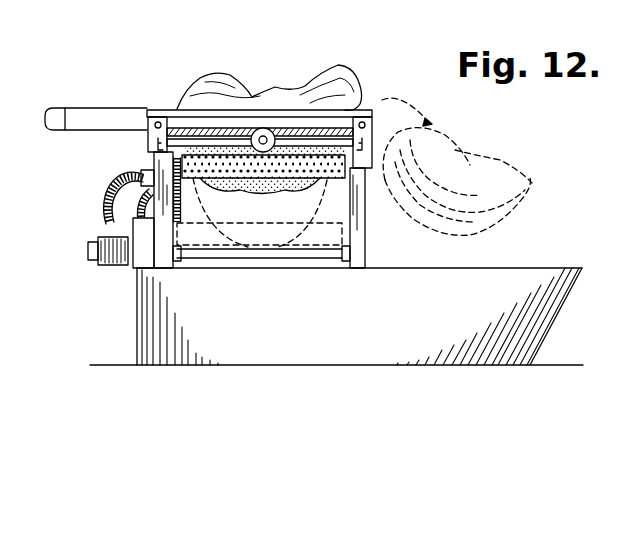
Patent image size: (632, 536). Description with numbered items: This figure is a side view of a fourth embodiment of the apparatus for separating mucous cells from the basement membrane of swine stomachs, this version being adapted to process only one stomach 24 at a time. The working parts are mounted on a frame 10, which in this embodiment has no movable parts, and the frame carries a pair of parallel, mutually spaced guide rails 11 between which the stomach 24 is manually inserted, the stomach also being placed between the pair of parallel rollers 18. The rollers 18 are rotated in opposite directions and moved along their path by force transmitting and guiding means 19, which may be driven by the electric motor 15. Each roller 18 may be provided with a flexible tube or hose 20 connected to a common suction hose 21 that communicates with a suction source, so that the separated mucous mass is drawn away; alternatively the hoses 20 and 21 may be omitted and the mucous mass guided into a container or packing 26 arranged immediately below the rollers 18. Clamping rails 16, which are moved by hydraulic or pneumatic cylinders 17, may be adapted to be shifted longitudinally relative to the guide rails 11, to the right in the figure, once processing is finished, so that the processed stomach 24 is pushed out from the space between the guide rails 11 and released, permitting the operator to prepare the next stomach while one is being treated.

The frame 10 is at (365, 250).
The guide rails 11 is at (108, 116).
The electric motor 15 is at (98, 265).
The clamping rails 16 is at (163, 137).
The hydraulic or pneumatic cylinders 17 is at (265, 128).
The rollers 18 is at (328, 180).
The force transmitting and guiding means 19 is at (145, 250).
The flexible tube or hose 20 is at (140, 210).
The common suction hose 21 is at (107, 197).
The stomach 24 is at (187, 103).
The container or packing 26 is at (550, 303).